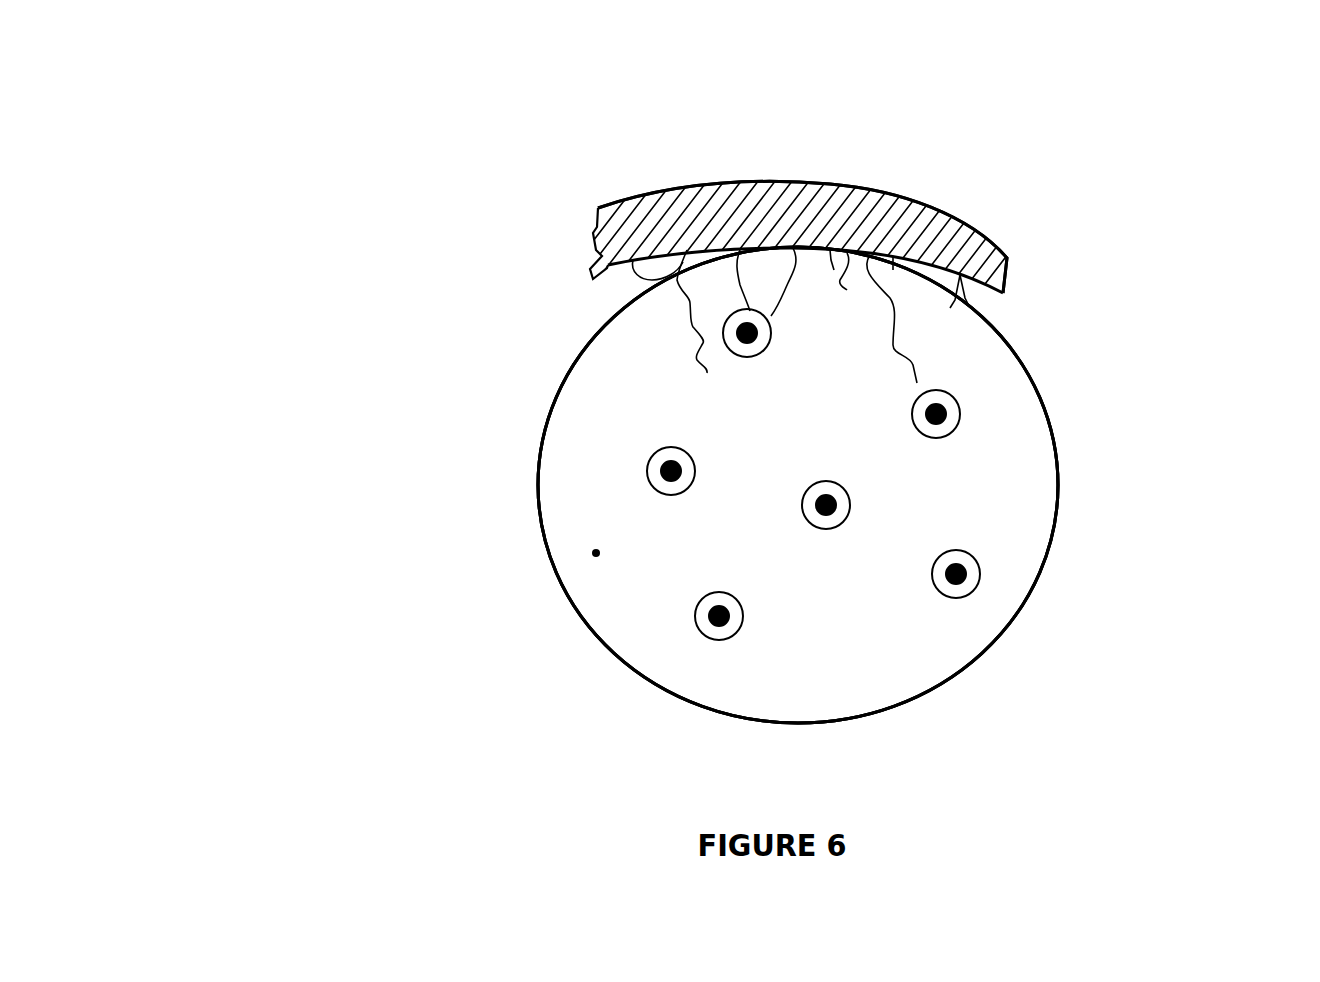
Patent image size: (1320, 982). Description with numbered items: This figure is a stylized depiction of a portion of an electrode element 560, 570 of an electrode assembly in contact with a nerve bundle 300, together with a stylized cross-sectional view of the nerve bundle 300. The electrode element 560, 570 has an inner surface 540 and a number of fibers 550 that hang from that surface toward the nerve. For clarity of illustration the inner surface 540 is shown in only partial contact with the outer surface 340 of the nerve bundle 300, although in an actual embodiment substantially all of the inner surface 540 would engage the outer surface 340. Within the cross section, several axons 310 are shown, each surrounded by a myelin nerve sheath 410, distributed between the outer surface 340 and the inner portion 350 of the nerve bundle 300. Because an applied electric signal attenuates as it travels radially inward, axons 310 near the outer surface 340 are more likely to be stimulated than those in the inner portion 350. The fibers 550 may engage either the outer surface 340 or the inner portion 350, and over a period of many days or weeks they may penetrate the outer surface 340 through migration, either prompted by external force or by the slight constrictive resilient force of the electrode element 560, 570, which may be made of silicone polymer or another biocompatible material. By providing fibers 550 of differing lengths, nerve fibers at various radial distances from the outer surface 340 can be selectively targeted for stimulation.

The cathode electrode element 560 is at (770, 155).
The anode electrode element 570 is at (802, 237).
The fibers 550 is at (900, 356).
The inner surface 540 is at (605, 274).
The nerve sheath 410 is at (984, 575).
The outer surface 340 is at (548, 427).
The inner portion 350 is at (596, 553).
The axon 310 is at (830, 527).
The nerve bundle 300 is at (657, 712).